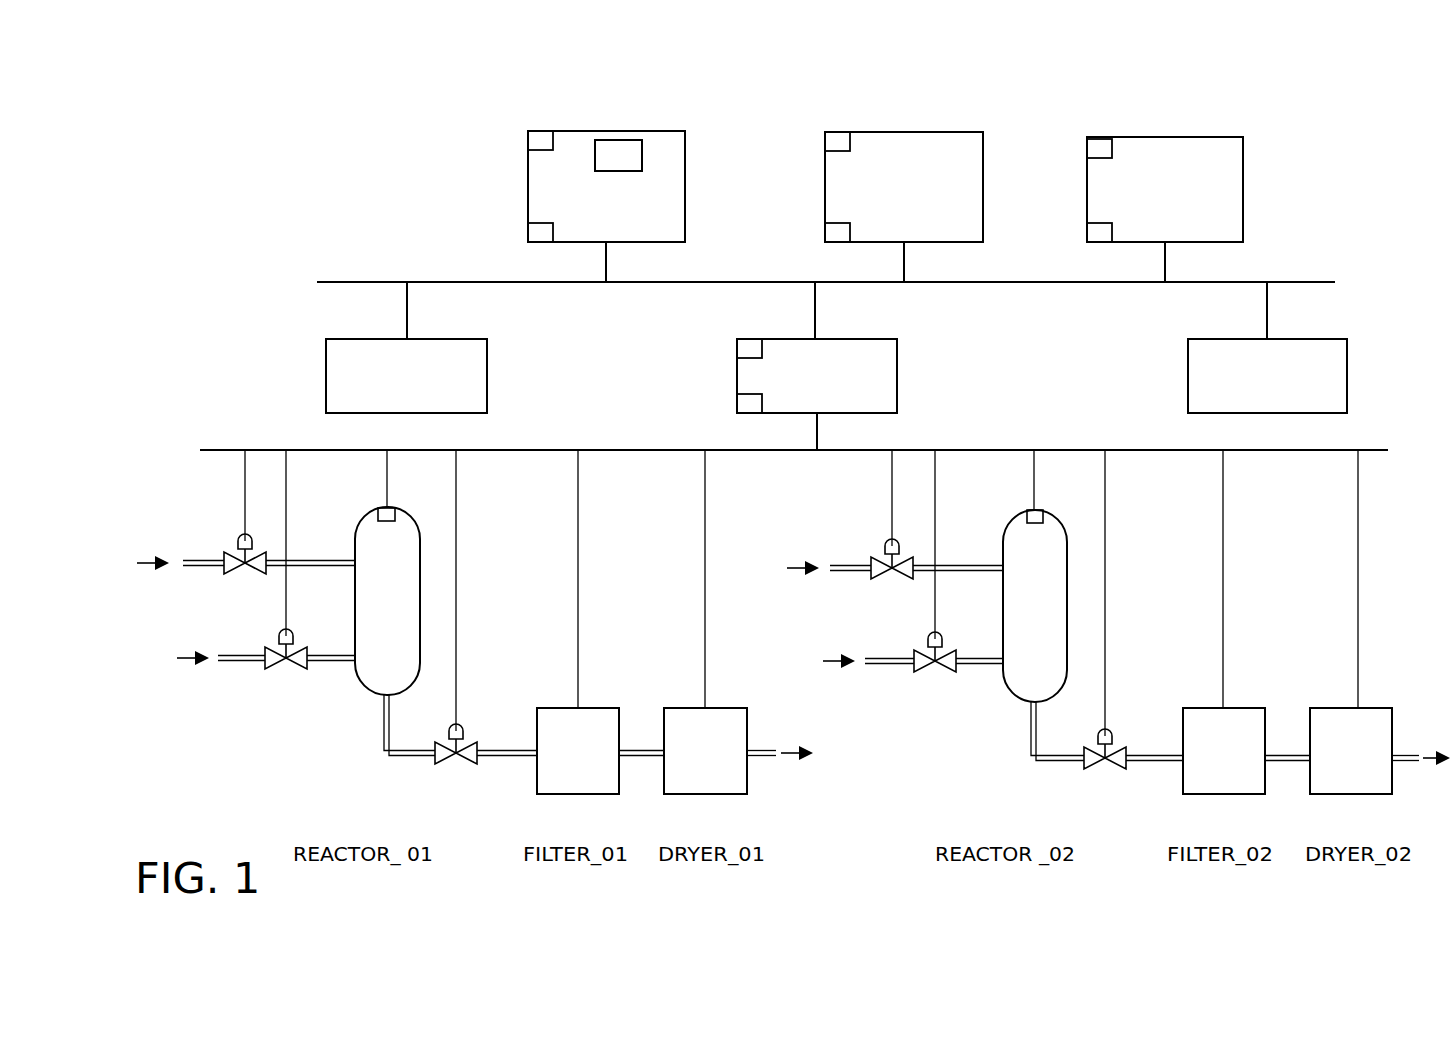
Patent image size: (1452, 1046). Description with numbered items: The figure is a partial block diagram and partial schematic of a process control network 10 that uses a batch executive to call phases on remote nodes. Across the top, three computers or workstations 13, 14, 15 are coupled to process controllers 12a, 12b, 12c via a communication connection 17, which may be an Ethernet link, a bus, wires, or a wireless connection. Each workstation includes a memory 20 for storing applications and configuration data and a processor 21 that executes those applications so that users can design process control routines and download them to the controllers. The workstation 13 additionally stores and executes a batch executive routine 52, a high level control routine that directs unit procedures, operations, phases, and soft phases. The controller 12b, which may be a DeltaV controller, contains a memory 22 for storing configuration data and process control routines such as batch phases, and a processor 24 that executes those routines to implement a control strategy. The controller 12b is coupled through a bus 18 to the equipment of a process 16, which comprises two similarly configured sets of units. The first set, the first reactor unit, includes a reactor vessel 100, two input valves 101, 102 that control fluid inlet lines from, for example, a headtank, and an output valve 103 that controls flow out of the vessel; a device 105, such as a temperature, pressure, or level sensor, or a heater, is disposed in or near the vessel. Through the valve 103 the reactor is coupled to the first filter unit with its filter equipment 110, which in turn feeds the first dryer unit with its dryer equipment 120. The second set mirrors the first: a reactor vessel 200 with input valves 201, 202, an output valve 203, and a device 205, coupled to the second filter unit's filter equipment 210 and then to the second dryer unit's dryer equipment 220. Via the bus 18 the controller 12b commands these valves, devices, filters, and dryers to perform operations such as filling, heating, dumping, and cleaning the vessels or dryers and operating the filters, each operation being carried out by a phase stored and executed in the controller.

The process control network 10 is at (256, 190).
The process controller 12a is at (488, 387).
The process controller 12b is at (898, 387).
The process controller 12c is at (1348, 387).
The workstation 13 is at (676, 131).
The workstation 14 is at (956, 132).
The workstation 15 is at (1190, 137).
The process 16 is at (242, 413).
The communication connection 17 is at (990, 284).
The bus 18 is at (822, 444).
The memory 20 is at (528, 236).
The processor 21 is at (528, 145).
The memory 22 is at (737, 405).
The processor 24 is at (741, 338).
The batch executive routine 52 is at (605, 139).
The reactor vessel 100 is at (387, 601).
The input valve 101 is at (231, 574).
The input valve 102 is at (272, 669).
The output valve 103 is at (442, 764).
The device 105 is at (380, 508).
The filter equipment 110 is at (578, 751).
The dryer equipment 120 is at (705, 751).
The reactor vessel 200 is at (1035, 606).
The input valve 201 is at (878, 579).
The input valve 202 is at (921, 672).
The output valve 203 is at (1091, 769).
The device 205 is at (1028, 510).
The filter equipment 210 is at (1224, 751).
The dryer equipment 220 is at (1351, 751).